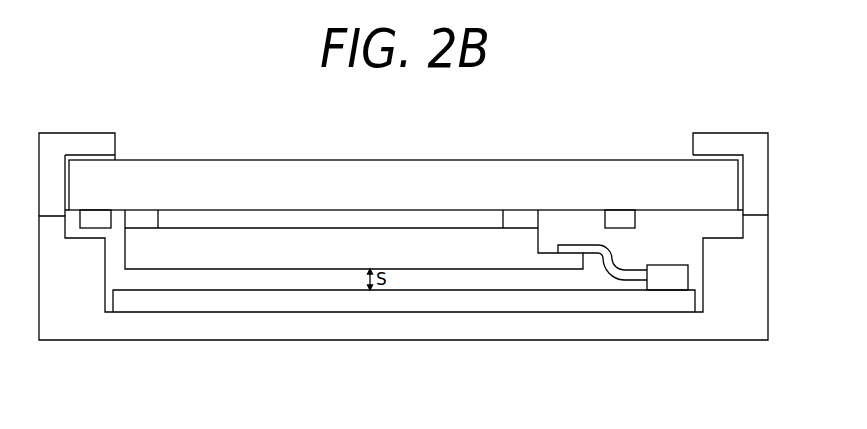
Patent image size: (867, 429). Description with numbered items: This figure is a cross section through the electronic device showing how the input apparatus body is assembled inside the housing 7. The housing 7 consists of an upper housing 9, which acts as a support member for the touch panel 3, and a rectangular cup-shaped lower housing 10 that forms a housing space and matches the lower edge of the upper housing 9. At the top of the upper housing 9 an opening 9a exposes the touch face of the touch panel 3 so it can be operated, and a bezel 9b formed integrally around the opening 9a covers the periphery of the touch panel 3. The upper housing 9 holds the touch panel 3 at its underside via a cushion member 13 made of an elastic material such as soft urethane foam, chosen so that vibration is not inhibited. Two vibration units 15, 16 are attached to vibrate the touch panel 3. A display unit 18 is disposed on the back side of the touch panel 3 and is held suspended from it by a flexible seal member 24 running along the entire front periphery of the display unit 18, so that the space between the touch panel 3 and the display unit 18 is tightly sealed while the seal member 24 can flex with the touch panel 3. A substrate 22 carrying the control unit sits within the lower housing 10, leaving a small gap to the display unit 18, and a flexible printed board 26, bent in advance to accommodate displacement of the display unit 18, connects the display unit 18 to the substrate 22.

The touch panel 3 is at (333, 180).
The housing 7 is at (437, 206).
The upper housing 9 is at (429, 144).
The opening 9a is at (115, 147).
The bezel 9b is at (732, 133).
The lower housing 10 is at (743, 285).
The cushion member 13 is at (720, 157).
The vibration unit 15 is at (618, 218).
The vibration unit 16 is at (98, 217).
The display unit 18 is at (499, 255).
The substrate 22 is at (337, 302).
The seal member 24 is at (518, 218).
The flexible printed board 26 is at (630, 278).